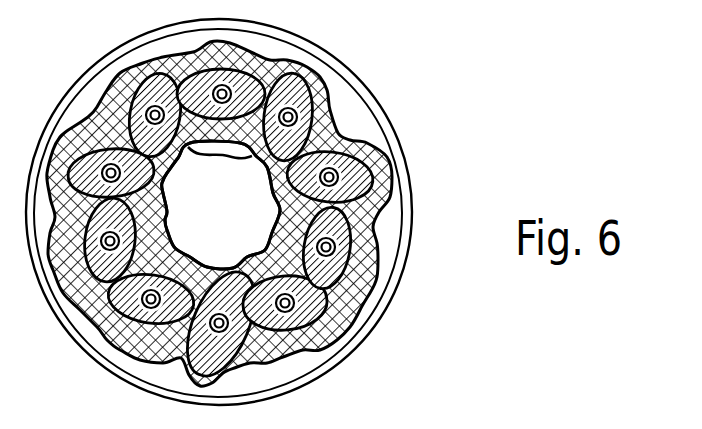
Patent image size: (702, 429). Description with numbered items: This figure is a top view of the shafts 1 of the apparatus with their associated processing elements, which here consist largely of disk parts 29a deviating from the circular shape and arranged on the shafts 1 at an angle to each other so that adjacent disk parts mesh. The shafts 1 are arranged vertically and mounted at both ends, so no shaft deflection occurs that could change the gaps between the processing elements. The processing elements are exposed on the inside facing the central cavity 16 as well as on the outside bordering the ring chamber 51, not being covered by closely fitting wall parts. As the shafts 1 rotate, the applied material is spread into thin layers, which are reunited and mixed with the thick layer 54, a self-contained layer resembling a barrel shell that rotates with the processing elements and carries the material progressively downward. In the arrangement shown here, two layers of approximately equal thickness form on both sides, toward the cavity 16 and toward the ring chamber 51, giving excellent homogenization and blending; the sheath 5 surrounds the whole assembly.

The shaft 1 is at (277, 214).
The outer sheath 5 is at (400, 288).
The cavity 16 is at (226, 255).
The disk part 29a is at (327, 73).
The ring chamber 51 is at (218, 213).
The thick layer 54 is at (385, 160).